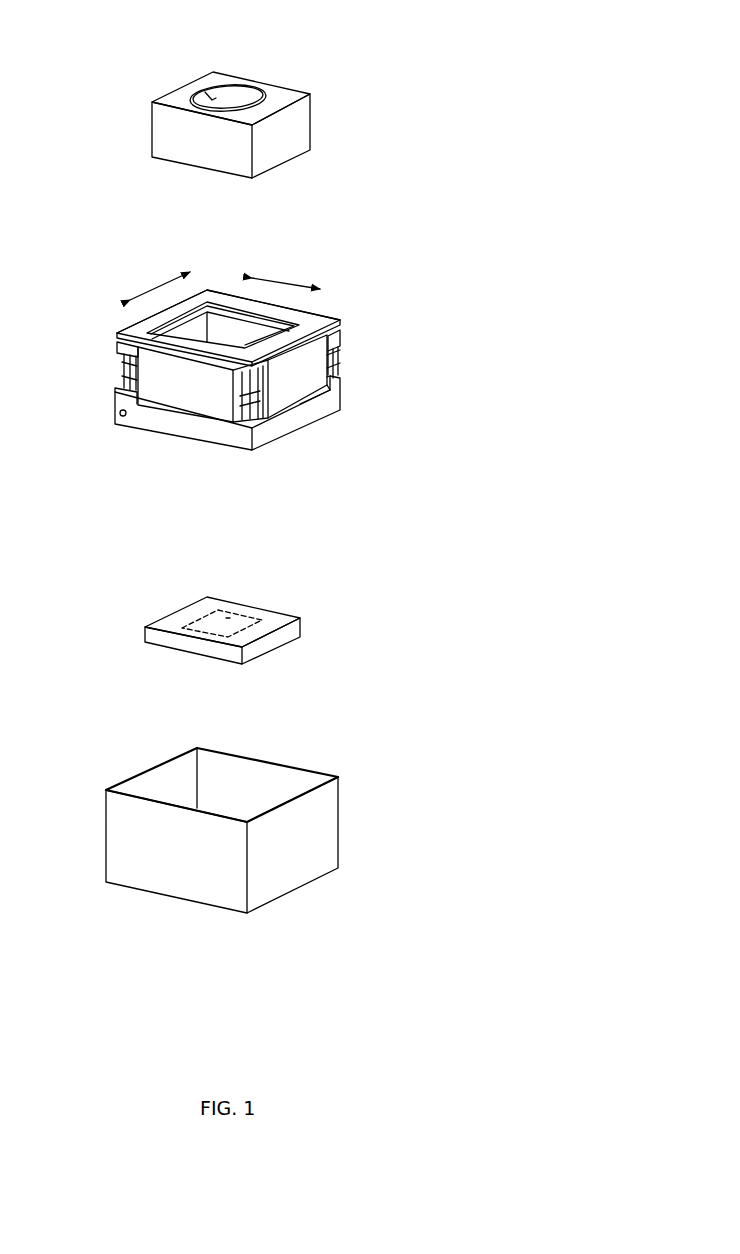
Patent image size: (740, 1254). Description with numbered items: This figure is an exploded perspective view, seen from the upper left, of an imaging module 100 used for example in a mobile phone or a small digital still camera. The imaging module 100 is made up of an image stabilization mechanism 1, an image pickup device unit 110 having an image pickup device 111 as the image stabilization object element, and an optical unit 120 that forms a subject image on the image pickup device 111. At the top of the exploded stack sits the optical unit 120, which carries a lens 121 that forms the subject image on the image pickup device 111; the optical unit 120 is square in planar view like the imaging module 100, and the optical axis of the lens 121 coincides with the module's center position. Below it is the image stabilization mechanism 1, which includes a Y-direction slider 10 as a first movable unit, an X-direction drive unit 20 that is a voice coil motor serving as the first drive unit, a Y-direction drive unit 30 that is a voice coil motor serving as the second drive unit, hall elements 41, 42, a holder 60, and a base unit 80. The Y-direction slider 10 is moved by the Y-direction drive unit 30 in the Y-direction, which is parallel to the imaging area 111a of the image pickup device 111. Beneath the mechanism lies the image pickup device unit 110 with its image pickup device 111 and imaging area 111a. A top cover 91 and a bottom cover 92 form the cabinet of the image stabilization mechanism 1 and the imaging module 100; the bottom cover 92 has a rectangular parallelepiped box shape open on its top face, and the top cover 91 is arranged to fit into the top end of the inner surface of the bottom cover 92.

The imaging module 100 is at (118, 78).
The optical unit 120 is at (300, 128).
The lens 121 is at (255, 97).
The image stabilization mechanism 1 is at (352, 315).
The Y-direction slider 10 is at (278, 325).
The X-direction drive unit 20 is at (172, 422).
The Y-direction drive unit 30 is at (298, 402).
The hall element 41 is at (120, 357).
The hall element 42 is at (335, 347).
The holder 60 is at (338, 383).
The base unit 80 is at (328, 418).
The top cover 91 is at (118, 327).
The bottom cover 92 is at (143, 772).
The image pickup device unit 110 is at (298, 623).
The image pickup device 111 is at (207, 615).
The imaging area 111a is at (228, 618).